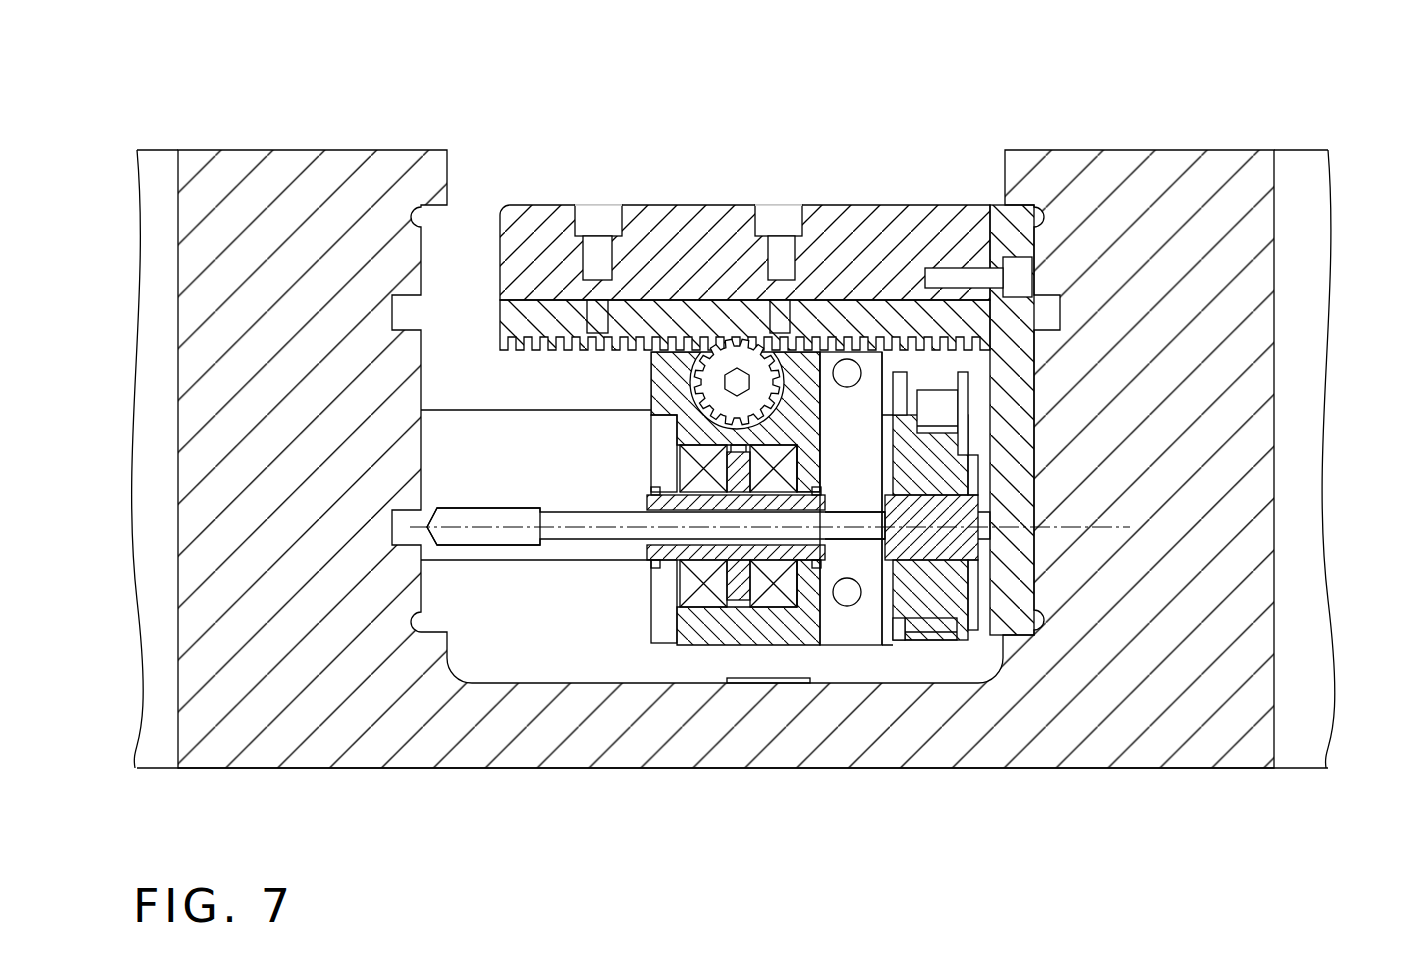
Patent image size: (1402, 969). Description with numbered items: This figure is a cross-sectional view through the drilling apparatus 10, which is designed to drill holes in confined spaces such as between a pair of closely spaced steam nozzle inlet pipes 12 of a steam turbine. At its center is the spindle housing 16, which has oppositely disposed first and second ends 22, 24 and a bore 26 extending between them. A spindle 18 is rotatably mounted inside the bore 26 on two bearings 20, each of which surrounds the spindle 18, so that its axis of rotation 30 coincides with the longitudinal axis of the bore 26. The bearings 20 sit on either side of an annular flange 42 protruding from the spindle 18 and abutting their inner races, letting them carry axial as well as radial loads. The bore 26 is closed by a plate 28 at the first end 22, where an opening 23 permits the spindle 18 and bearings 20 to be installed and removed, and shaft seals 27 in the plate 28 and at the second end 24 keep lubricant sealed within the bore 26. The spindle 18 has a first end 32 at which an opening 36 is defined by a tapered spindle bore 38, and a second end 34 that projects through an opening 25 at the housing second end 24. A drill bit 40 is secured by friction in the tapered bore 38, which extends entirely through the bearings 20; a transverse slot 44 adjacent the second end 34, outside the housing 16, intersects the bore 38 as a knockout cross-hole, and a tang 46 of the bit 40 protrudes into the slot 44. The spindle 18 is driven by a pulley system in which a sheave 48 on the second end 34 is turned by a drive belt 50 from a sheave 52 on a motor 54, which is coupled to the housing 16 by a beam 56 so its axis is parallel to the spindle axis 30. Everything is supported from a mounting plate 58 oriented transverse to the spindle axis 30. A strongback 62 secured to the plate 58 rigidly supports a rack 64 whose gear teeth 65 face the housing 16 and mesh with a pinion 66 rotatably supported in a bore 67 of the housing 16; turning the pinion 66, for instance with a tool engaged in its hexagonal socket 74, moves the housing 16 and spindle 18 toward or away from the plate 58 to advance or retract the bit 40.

The drilling apparatus 10 is at (492, 96).
The steam nozzle inlet pipe 12 is at (252, 150).
The spindle housing 16 is at (695, 648).
The spindle 18 is at (822, 604).
The bearings 20 is at (715, 452).
The first end of housing 22 is at (660, 388).
The opening 23 is at (660, 421).
The second end of housing 24 is at (858, 380).
The opening 25 is at (805, 484).
The bore 26 is at (670, 602).
The shaft seals 27 is at (816, 489).
The plate 28 is at (663, 455).
The axis of rotation 30 is at (448, 525).
The first end of spindle 32 is at (648, 496).
The second end of spindle 34 is at (960, 487).
The opening 36 is at (645, 540).
The spindle bore 38 is at (647, 515).
The drill bit 40 is at (460, 508).
The annular flange 42 is at (742, 598).
The transverse slot 44 is at (900, 578).
The tang 46 is at (888, 492).
The sheave 48 is at (965, 632).
The drive belt 50 is at (950, 410).
The sheave 52 is at (966, 380).
The motor 54 is at (513, 398).
The beam 56 is at (850, 646).
The mounting plate 58 is at (999, 213).
The strongback 62 is at (700, 212).
The rack 64 is at (522, 321).
The gear teeth 65 is at (573, 350).
The pinion 66 is at (733, 347).
The bore 67 is at (688, 380).
The hexagonal socket 74 is at (839, 388).